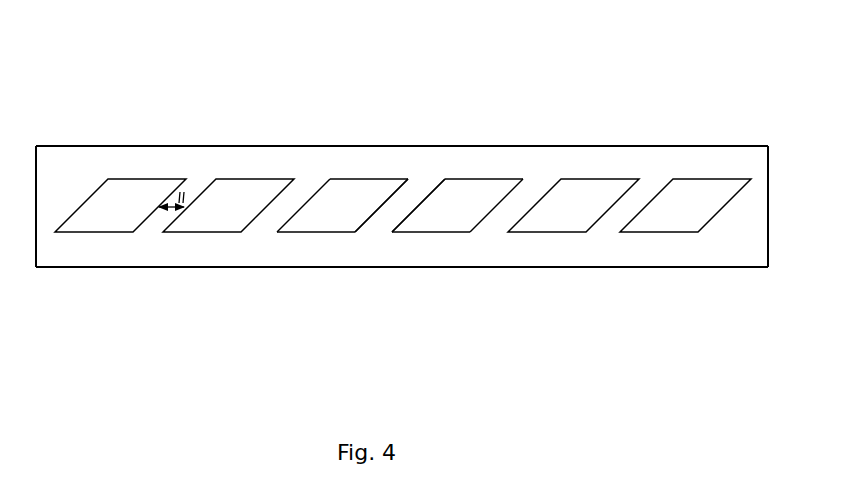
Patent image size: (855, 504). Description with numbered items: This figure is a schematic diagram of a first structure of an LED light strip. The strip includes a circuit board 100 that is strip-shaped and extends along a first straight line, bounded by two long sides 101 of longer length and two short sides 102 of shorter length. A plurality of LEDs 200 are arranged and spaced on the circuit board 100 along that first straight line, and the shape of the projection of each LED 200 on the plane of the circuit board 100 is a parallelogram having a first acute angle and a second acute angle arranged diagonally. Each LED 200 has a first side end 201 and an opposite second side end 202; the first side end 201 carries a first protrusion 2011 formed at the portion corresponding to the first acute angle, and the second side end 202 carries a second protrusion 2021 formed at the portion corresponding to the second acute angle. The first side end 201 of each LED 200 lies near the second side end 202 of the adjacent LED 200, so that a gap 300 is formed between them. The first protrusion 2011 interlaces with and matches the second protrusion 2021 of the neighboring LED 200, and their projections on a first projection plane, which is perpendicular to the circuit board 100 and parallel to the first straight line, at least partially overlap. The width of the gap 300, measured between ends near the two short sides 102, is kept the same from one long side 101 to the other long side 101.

The circuit board 100 is at (405, 196).
The long side 101 is at (240, 150).
The short side 102 is at (35, 202).
The LED 200 is at (415, 177).
The first side end 201 is at (310, 200).
The first protrusion 2011 is at (285, 234).
The second side end 202 is at (375, 213).
The second protrusion 2021 is at (392, 231).
The gap 300 is at (392, 232).